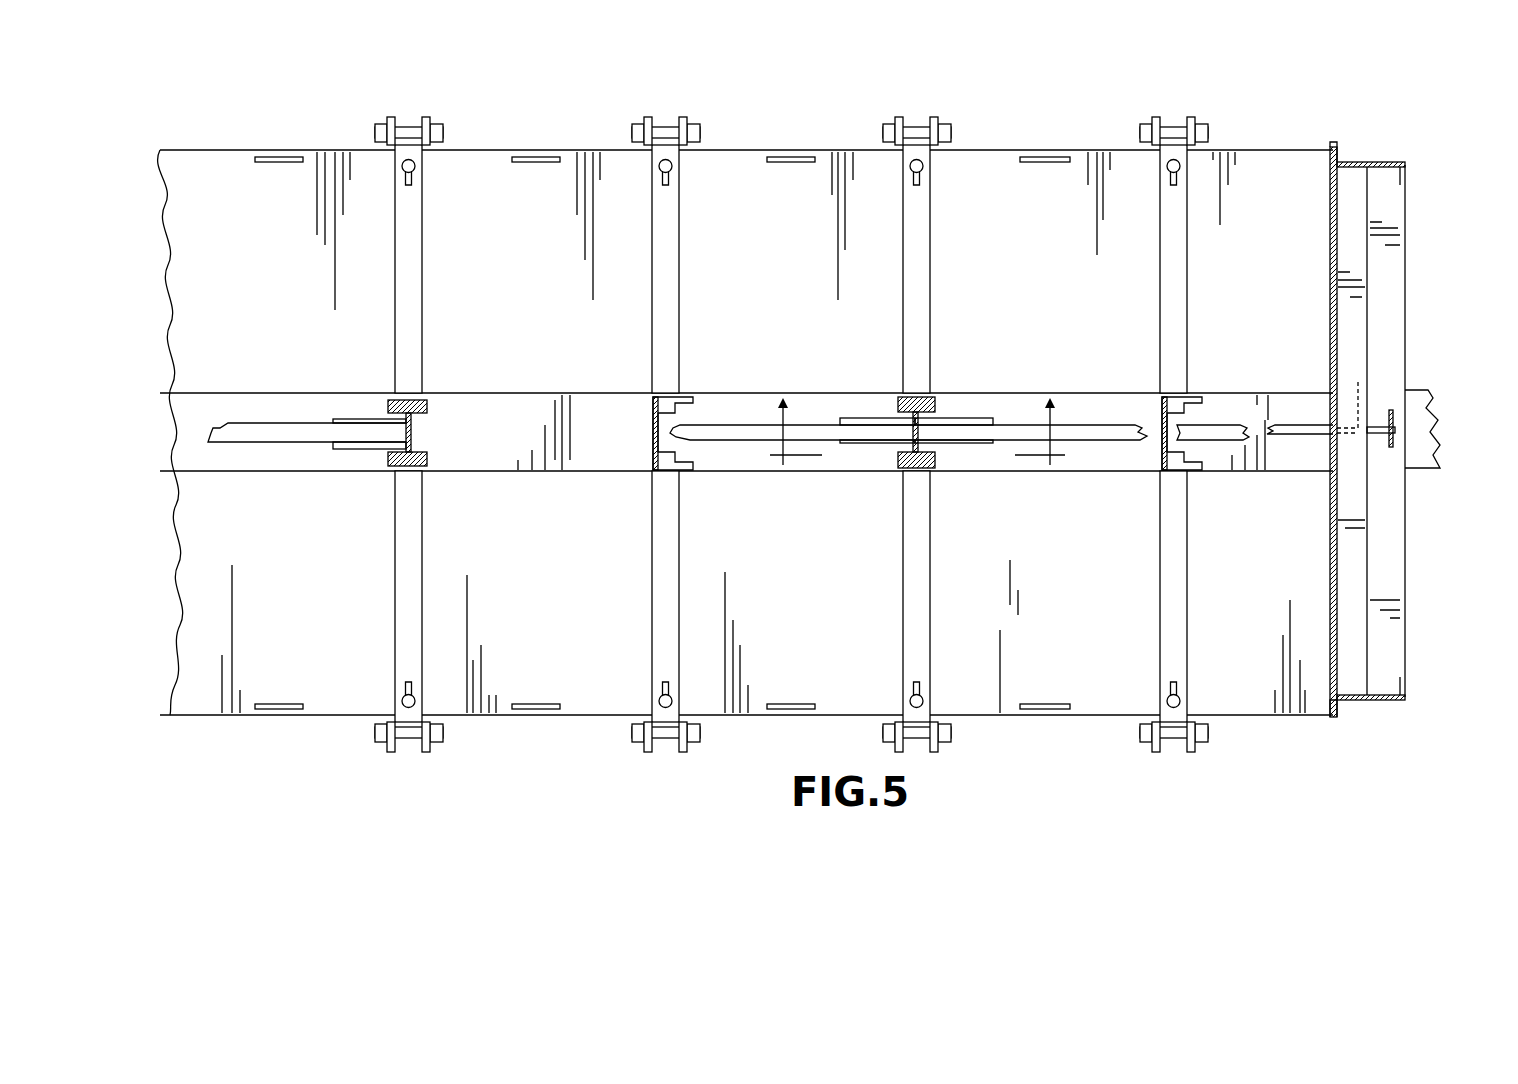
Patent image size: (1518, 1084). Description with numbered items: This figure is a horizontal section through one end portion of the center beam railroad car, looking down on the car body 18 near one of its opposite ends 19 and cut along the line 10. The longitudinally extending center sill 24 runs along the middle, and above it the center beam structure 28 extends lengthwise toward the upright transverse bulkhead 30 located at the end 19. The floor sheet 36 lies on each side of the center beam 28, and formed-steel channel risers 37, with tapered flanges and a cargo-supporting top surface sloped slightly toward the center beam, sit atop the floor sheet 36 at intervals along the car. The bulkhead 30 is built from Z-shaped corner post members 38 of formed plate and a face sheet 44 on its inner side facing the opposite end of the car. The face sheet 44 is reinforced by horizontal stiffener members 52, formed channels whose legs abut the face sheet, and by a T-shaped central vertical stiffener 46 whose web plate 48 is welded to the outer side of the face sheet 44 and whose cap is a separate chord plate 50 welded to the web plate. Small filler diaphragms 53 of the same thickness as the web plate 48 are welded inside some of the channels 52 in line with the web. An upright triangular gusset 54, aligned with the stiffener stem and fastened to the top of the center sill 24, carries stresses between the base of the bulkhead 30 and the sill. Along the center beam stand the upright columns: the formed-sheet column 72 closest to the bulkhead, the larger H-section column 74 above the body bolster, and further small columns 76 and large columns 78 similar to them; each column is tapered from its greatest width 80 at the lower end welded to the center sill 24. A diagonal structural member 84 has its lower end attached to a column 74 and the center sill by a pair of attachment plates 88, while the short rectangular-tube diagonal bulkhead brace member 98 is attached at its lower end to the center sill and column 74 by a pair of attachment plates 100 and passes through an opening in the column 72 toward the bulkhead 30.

The direction of panel movement 10 is at (914, 435).
The car body 18 is at (1080, 126).
The opposite ends 19 is at (1410, 330).
The center sill 24 is at (470, 458).
The center beam structure 28 is at (665, 393).
The bulkhead 30 is at (1332, 715).
The floor sheet 36 is at (1108, 700).
The riser 37 is at (1178, 252).
The corner post member 38 is at (1350, 150).
The face sheet 44 is at (1330, 200).
The central vertical stiffener 46 is at (1395, 447).
The web plate 48 is at (1390, 410).
The chord plate 50 is at (1395, 430).
The horizontal stiffener member 52 is at (1352, 213).
The filler diaphragm 53 is at (1330, 400).
The triangular gusset 54 is at (1295, 437).
The column 72 is at (1163, 445).
The column 74 is at (905, 430).
The column 76 is at (653, 435).
The column 78 is at (428, 418).
The greatest width 80 is at (920, 393).
The diagonal structural member 84 is at (280, 445).
The attachment plate 88 is at (360, 400).
The diagonal bulkhead brace structural member 98 is at (1090, 425).
The attachment plate 100 is at (985, 418).